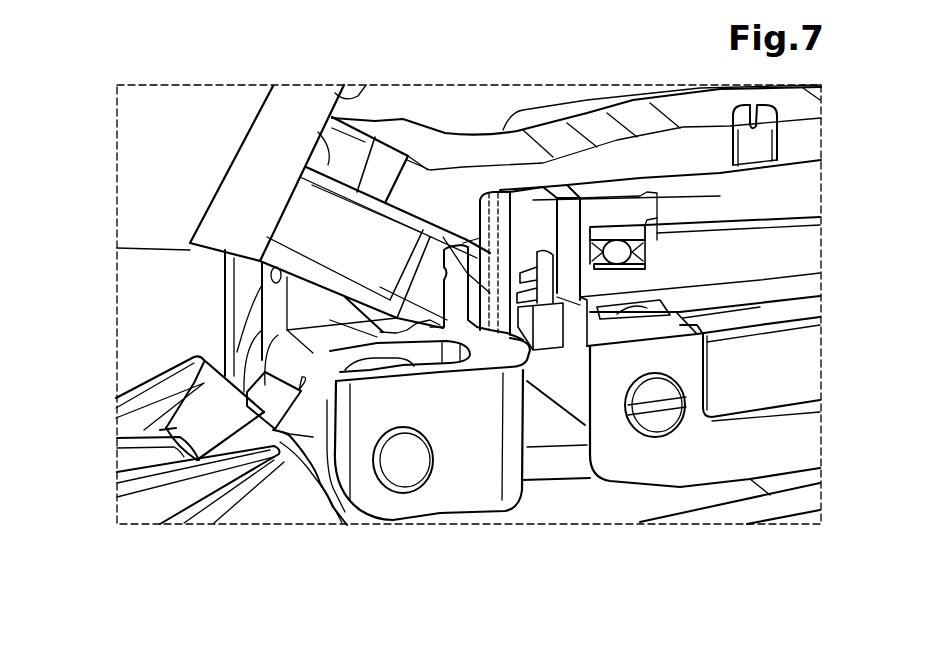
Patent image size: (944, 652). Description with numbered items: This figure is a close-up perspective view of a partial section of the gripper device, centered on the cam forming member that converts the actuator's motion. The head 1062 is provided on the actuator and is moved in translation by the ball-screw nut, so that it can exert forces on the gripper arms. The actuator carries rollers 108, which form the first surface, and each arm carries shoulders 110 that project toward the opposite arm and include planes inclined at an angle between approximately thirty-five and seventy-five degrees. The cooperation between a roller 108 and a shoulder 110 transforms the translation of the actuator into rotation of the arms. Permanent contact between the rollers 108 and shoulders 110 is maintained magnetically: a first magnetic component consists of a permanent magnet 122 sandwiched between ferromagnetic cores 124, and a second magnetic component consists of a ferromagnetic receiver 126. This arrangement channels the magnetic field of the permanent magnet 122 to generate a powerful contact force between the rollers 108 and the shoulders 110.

The permanent magnet 122 is at (395, 250).
The ferromagnetic cores 124 is at (228, 222).
The ferromagnetic receiver 126 is at (273, 137).
The rollers 108 is at (237, 350).
The shoulders 110 is at (181, 380).
The head 1062 is at (458, 485).